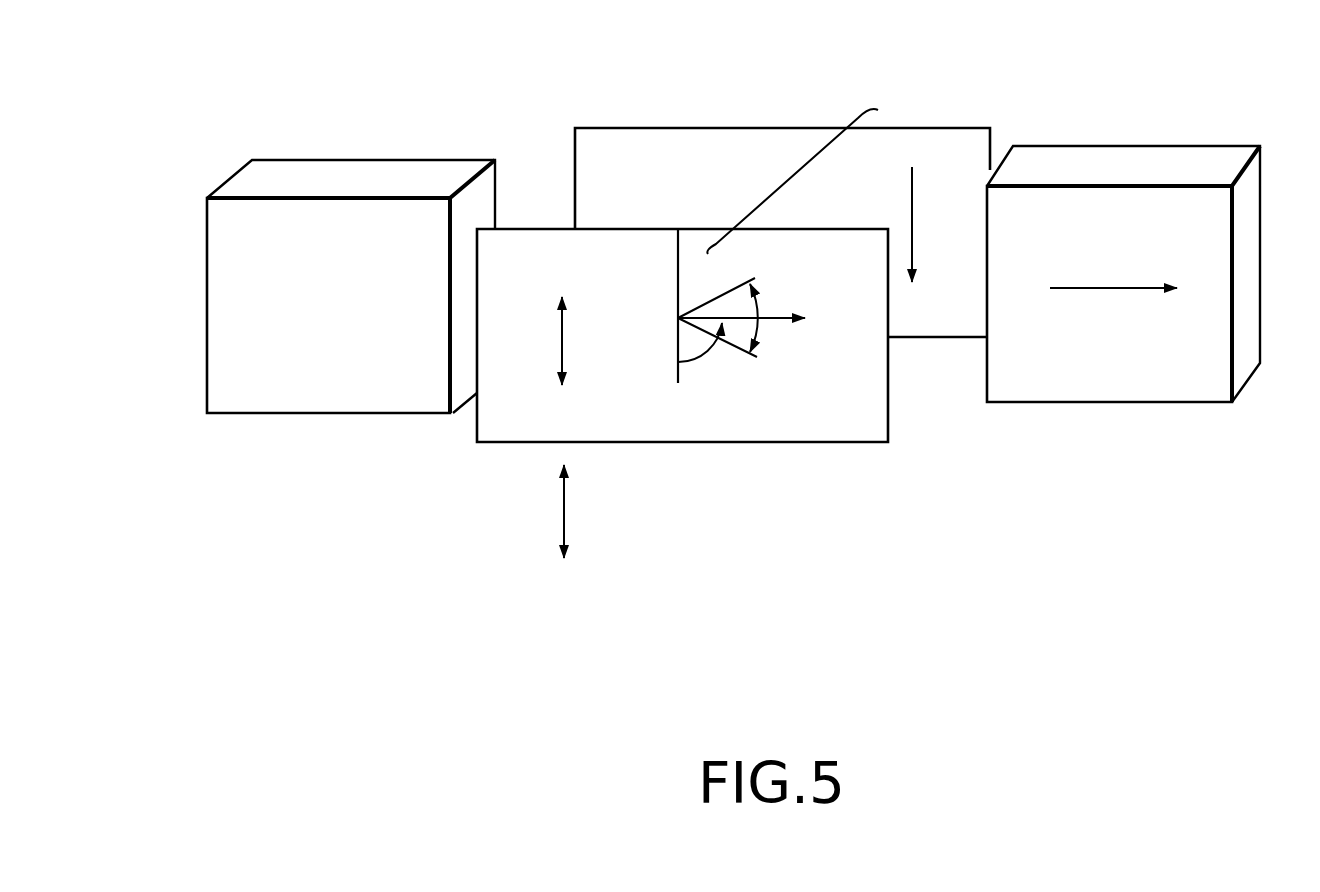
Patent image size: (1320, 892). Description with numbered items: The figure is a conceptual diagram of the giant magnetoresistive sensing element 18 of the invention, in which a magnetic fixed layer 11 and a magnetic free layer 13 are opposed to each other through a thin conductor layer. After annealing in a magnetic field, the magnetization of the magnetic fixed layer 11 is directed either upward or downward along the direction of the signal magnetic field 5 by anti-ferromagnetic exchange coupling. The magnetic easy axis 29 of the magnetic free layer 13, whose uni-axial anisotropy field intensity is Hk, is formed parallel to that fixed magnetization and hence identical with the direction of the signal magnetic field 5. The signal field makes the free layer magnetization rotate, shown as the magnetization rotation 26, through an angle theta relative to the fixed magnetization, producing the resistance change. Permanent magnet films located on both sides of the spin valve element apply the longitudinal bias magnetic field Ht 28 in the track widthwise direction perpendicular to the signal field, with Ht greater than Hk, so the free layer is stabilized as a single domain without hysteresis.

The signal magnetic field 5 is at (560, 512).
The magnetic fixed layer 11 is at (590, 175).
The magnetic free layer 13 is at (488, 411).
The giant magnetoresistive sensing element 18 is at (770, 167).
The magnetization rotation 26 is at (762, 333).
The longitudinal bias magnetic field Ht 28 is at (1118, 291).
The magnetic easy axis 29 is at (560, 340).